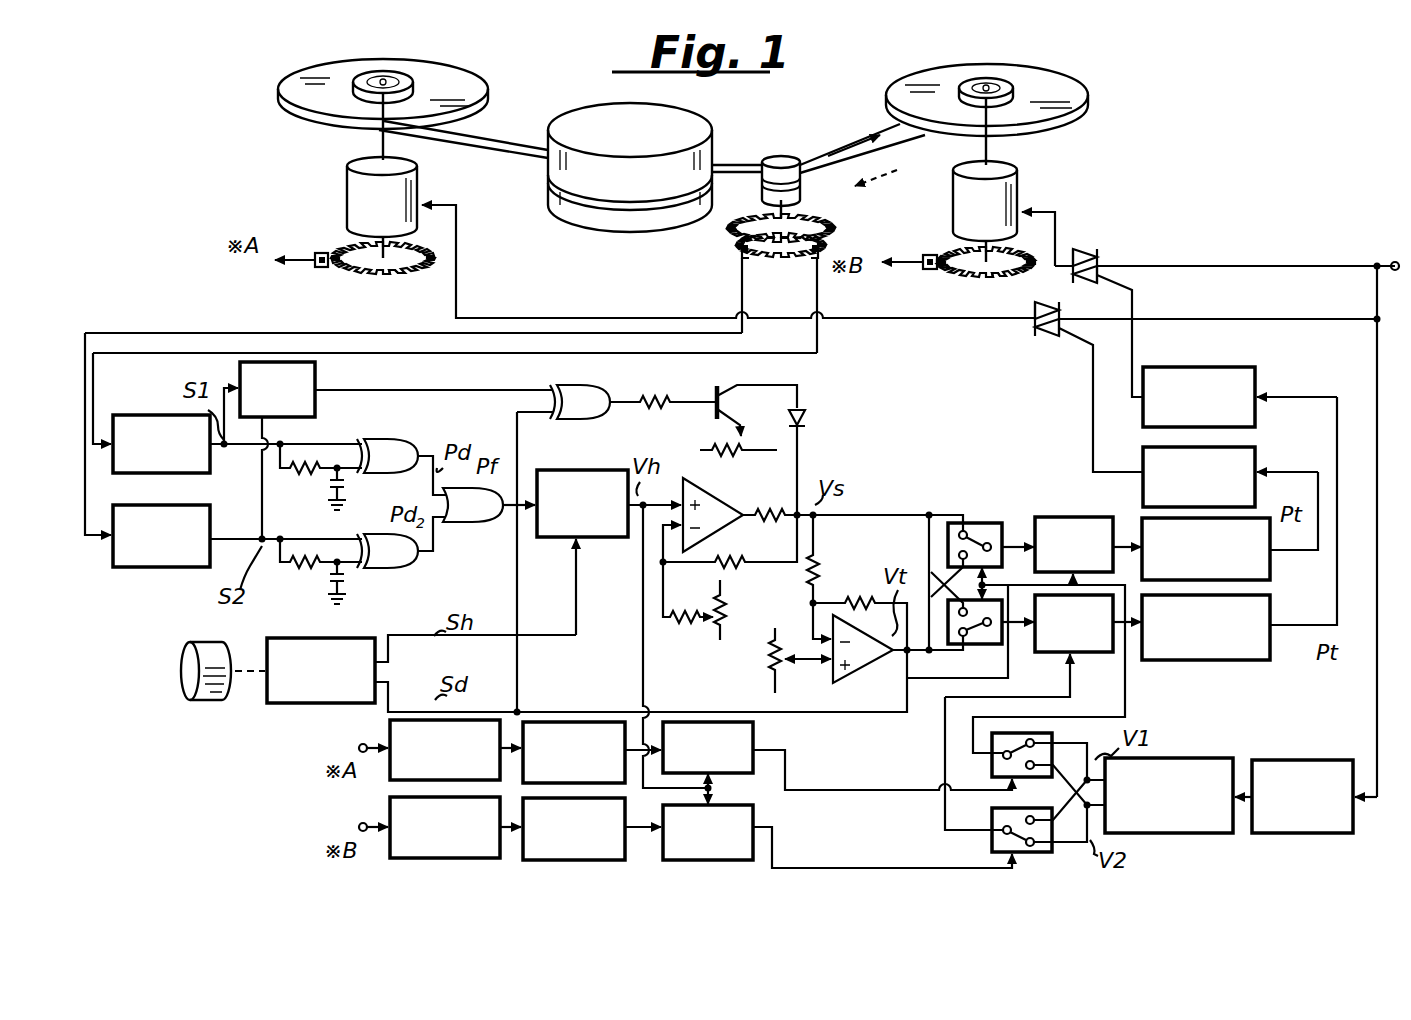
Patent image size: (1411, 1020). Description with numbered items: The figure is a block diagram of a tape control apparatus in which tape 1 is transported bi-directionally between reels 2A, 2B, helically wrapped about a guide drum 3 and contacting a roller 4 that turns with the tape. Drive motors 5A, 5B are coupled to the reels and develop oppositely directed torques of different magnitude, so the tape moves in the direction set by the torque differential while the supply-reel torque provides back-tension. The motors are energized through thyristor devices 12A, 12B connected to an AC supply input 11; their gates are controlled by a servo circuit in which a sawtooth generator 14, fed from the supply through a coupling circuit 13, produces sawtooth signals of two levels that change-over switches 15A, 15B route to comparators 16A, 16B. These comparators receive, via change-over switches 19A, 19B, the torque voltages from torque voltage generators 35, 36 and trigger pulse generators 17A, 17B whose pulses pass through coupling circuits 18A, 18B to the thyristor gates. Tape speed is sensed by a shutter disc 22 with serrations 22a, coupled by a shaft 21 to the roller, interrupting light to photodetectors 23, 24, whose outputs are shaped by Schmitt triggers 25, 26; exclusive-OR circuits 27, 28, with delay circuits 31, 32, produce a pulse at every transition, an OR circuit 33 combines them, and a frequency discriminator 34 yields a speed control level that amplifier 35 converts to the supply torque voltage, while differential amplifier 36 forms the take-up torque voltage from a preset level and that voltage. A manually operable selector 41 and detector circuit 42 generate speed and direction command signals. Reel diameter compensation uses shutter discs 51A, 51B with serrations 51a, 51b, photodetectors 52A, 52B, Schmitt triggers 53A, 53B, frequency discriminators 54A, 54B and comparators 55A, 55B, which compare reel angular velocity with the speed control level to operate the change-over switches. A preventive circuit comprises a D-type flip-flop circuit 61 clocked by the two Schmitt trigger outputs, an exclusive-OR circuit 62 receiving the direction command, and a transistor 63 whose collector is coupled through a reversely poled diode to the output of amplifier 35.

The tape 1 is at (509, 168).
The reel 2A is at (304, 124).
The reel 2B is at (1080, 128).
The guide drum 3 is at (571, 236).
The roller 4 is at (802, 198).
The drive motor 5A is at (347, 202).
The drive motor 5B is at (1019, 182).
The AC supply input 11 is at (1392, 254).
The thyristor device 12A is at (1033, 342).
The thyristor device 12B is at (1100, 255).
The coupling circuit 13 is at (1290, 755).
The sawtooth generator 14 is at (1160, 750).
The change-over switch 15A is at (988, 760).
The change-over switch 15B is at (990, 840).
The comparator 16A is at (1066, 517).
The comparator 16B is at (1088, 665).
The pulse generator 17A is at (1272, 572).
The pulse generator 17B is at (1272, 655).
The coupling circuit 18A is at (1256, 463).
The coupling circuit 18B is at (1256, 392).
The change-over switch 19A is at (988, 521).
The change-over switch 19B is at (1002, 665).
The shaft 21 is at (775, 206).
The shutter disc 22 is at (784, 260).
The serrations of shutter disc 22a is at (836, 234).
The photodetector 23 is at (818, 262).
The photodetector 24 is at (731, 254).
The Schmitt trigger 25 is at (212, 470).
The Schmitt trigger 26 is at (189, 569).
The exclusive-OR circuit 27 is at (412, 444).
The exclusive-OR circuit 28 is at (397, 568).
The delay circuit 31 is at (317, 486).
The delay circuit 32 is at (317, 584).
The OR circuit 33 is at (470, 528).
The frequency discriminator 34 is at (600, 540).
The torque voltage generator 35 is at (735, 535).
The torque voltage generator 36 is at (885, 670).
The selector 41 is at (210, 713).
The detector circuit 42 is at (294, 711).
The shutter disc 51A is at (374, 277).
The serrations 51a is at (406, 277).
The shutter disc 51B is at (972, 278).
The serrations 51b is at (1008, 278).
The photodetector 52A is at (315, 270).
The photodetector 52B is at (922, 272).
The Schmitt trigger 53A is at (384, 734).
The Schmitt trigger 53B is at (429, 858).
The frequency discriminator 54A is at (570, 720).
The frequency discriminator 54B is at (569, 858).
The comparator 55A is at (755, 742).
The comparator 55B is at (755, 822).
The D-type flip-flop circuit 61 is at (315, 404).
The exclusive-OR circuit 62 is at (590, 422).
The transistor 63 is at (714, 402).